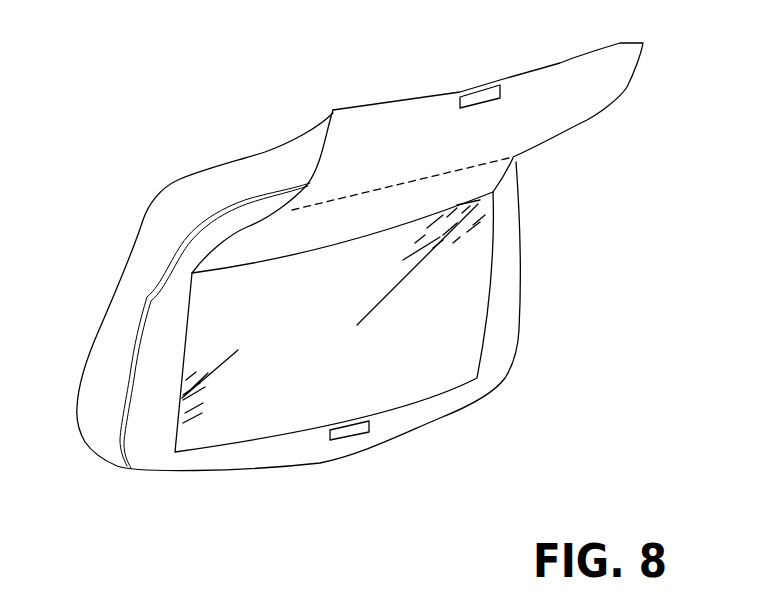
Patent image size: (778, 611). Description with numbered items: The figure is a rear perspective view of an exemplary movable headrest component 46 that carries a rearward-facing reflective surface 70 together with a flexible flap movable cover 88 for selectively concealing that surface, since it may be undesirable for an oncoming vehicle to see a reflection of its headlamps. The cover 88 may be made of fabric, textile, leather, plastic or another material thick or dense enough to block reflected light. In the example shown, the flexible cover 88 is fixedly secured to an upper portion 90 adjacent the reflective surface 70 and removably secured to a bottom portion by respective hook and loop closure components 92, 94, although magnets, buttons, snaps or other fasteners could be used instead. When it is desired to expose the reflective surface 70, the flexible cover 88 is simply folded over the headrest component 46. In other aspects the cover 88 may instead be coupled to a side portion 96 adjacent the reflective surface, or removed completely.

The movable headrest component 46 is at (658, 195).
The reflective surface 70 is at (308, 372).
The flexible flap movable cover 88 is at (381, 130).
The upper portion 90 is at (412, 225).
The hook and loop closure component 92 is at (360, 432).
The hook and loop closure component 94 is at (480, 98).
The side portion 96 is at (180, 382).